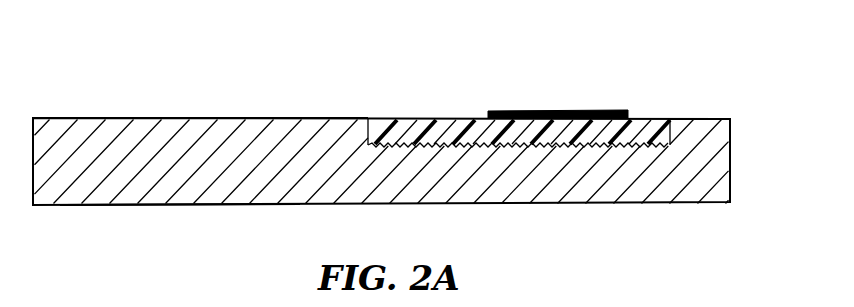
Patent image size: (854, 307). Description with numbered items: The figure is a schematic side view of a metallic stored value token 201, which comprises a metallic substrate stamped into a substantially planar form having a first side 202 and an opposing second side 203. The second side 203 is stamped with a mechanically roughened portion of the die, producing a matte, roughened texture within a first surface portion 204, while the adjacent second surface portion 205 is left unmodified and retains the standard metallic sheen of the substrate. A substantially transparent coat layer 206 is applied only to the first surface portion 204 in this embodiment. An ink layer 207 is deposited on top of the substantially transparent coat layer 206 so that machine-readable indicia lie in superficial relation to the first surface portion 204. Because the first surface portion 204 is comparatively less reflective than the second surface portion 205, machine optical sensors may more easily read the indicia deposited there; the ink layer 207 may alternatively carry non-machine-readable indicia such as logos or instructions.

The stored value token 201 is at (755, 120).
The first side 202 is at (95, 214).
The second side 203 is at (86, 109).
The first surface portion 204 is at (672, 83).
The second surface portion 205 is at (222, 118).
The substantially transparent coat layer 206 is at (419, 117).
The ink layer 207 is at (547, 111).